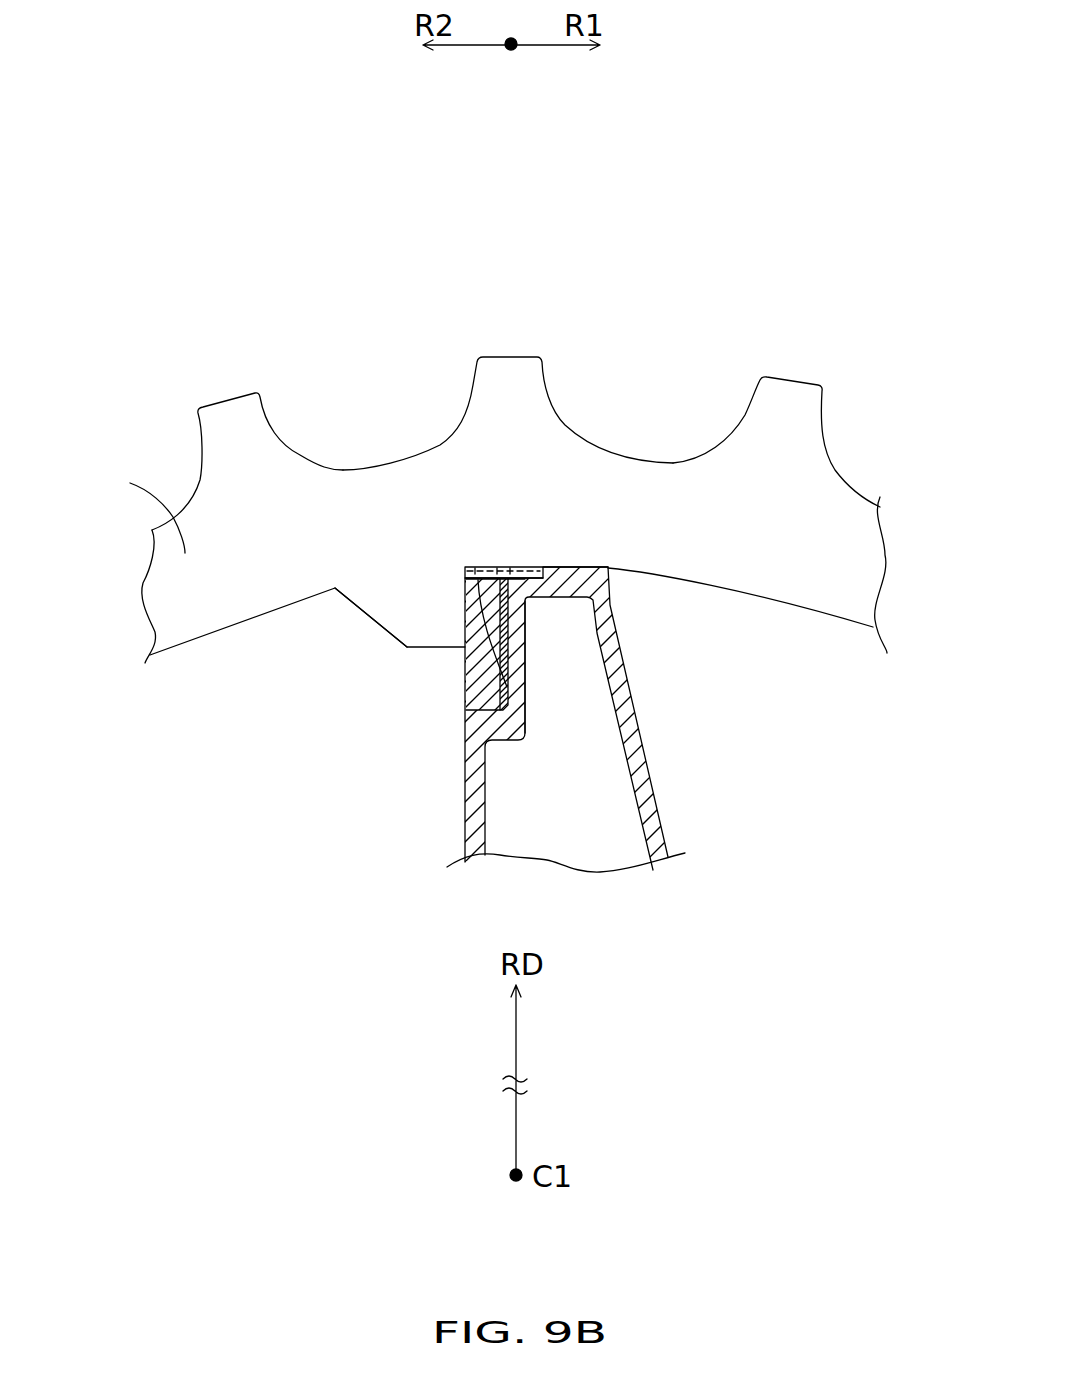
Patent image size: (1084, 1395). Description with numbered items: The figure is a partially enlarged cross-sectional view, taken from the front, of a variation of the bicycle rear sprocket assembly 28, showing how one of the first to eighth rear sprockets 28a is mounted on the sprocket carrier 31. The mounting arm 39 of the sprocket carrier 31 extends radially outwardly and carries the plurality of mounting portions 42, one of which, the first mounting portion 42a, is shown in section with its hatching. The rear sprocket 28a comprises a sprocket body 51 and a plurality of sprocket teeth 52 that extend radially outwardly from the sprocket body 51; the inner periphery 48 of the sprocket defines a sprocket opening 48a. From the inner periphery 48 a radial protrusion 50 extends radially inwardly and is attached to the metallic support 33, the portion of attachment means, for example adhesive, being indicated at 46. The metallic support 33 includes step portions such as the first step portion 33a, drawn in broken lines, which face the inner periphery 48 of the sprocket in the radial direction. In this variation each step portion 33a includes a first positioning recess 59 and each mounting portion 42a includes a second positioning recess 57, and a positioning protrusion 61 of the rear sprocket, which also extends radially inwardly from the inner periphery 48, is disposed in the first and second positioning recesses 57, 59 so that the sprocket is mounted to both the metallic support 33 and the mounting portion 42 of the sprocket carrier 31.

The bicycle rear sprocket assembly 28 is at (507, 385).
The first rear sprocket 28a is at (517, 331).
The sprocket teeth 52 is at (219, 380).
The sprocket body 51 is at (130, 483).
The radial protrusion 50 is at (375, 597).
The inner periphery 48 is at (190, 635).
The sprocket opening 48a is at (293, 788).
The first step portion 33a is at (472, 565).
The metallic support 33 is at (448, 680).
The attachment means portion 46 is at (507, 681).
The second positioning recess 57 is at (493, 567).
The first positioning recess 59 is at (523, 567).
The first mounting portion 42a is at (706, 415).
The mounting portion 42 is at (567, 567).
The mounting arm 39 is at (673, 720).
The sprocket carrier 31 is at (675, 784).
The positioning protrusion 61 is at (525, 668).